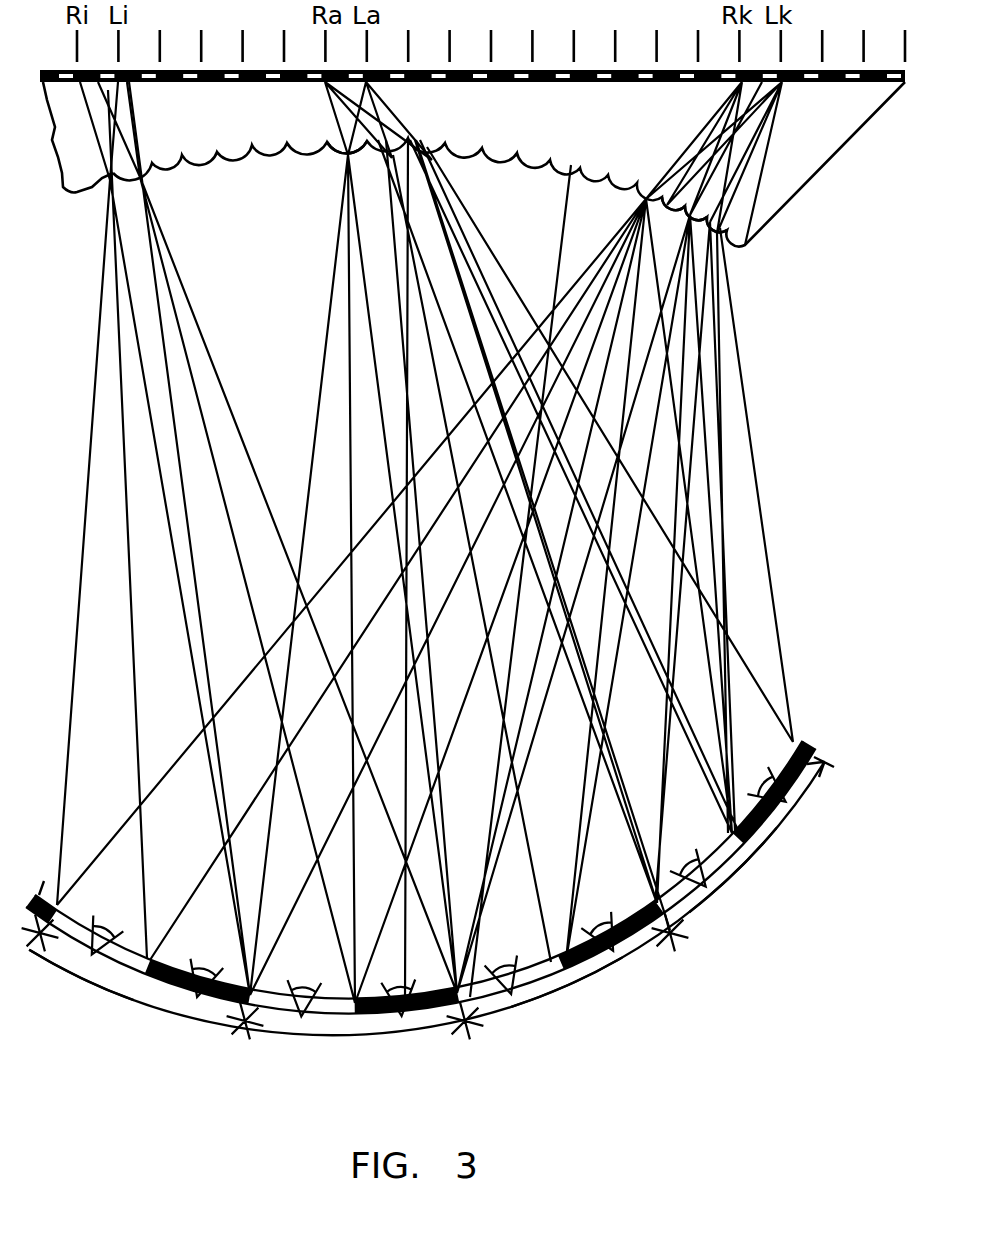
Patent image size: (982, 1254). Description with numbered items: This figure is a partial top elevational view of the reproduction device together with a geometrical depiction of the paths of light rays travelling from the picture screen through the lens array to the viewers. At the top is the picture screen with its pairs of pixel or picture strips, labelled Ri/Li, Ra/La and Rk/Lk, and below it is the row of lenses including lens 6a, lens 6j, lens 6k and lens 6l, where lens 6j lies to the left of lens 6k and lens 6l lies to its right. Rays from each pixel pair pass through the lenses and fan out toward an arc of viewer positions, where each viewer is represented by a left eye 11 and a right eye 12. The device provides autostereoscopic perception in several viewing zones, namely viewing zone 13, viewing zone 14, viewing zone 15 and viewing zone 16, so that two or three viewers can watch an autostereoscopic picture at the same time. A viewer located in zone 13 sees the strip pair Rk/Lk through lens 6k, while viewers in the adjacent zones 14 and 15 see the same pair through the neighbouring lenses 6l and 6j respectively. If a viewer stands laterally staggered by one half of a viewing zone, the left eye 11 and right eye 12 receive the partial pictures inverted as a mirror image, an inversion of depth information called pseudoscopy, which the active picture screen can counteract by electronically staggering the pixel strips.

The lens 6a is at (347, 152).
The lens 6j is at (676, 213).
The lens 6k is at (697, 224).
The lens 6l is at (718, 236).
The left eye 11 is at (706, 889).
The right eye 12 is at (786, 804).
The viewing zone 13 is at (360, 1038).
The viewing zone 14 is at (597, 980).
The viewing zone 15 is at (121, 987).
The viewing zone 16 is at (744, 870).